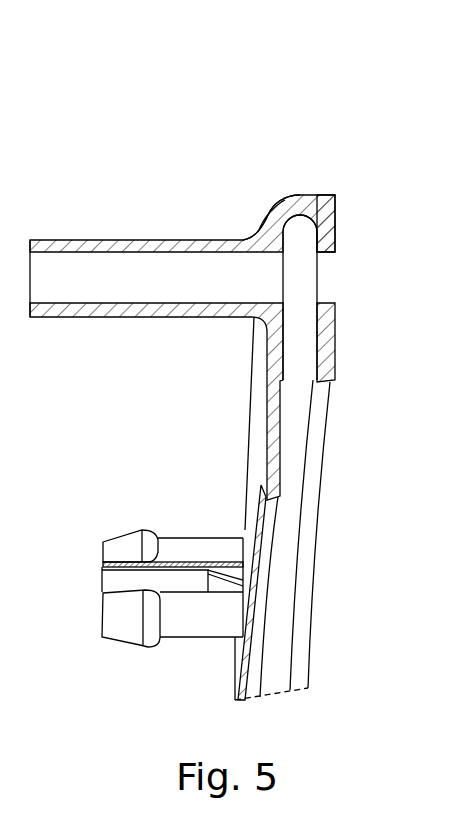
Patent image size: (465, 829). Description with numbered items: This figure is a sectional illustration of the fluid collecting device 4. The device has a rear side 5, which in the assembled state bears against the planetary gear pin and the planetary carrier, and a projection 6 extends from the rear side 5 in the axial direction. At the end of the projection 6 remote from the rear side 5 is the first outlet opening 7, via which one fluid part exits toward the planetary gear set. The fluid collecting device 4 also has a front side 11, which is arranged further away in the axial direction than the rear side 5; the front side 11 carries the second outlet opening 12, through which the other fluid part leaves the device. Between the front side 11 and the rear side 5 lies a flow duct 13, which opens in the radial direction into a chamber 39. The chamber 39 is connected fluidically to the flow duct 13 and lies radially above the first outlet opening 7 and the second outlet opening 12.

The fluid collecting device 4 is at (234, 195).
The rear side 5 is at (282, 458).
The projection 6 is at (157, 243).
The first outlet opening 7 is at (29, 273).
The front side 11 is at (325, 347).
The second outlet opening 12 is at (333, 262).
The flow duct 13 is at (300, 362).
The chamber 39 is at (298, 230).